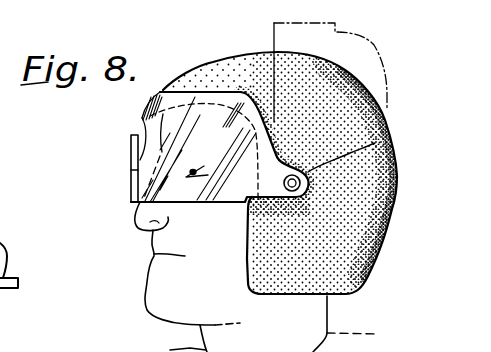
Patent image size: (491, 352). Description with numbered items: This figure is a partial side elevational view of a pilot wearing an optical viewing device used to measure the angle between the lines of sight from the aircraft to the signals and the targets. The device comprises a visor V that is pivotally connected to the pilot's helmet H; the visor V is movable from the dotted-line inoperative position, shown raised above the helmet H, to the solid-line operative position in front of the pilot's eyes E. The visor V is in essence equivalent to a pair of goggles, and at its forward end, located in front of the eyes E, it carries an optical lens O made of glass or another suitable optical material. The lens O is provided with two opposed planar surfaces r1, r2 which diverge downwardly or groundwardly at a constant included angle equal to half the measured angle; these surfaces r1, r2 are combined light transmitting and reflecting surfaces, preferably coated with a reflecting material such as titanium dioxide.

The helmet H is at (378, 246).
The visor V is at (205, 95).
The optical lens O is at (126, 181).
The planar surface r1 is at (130, 170).
The planar surface r2 is at (140, 125).
The eyes E is at (203, 163).